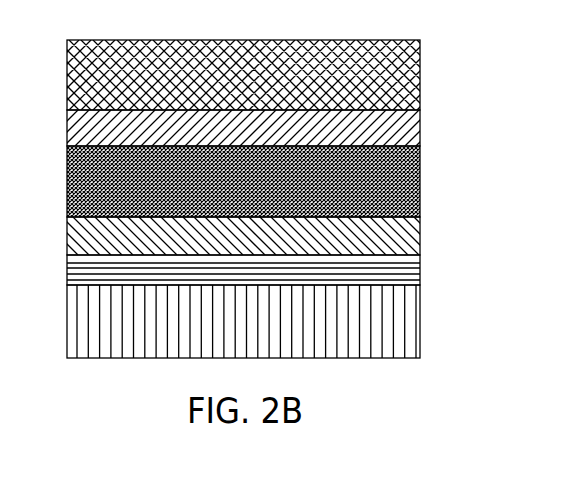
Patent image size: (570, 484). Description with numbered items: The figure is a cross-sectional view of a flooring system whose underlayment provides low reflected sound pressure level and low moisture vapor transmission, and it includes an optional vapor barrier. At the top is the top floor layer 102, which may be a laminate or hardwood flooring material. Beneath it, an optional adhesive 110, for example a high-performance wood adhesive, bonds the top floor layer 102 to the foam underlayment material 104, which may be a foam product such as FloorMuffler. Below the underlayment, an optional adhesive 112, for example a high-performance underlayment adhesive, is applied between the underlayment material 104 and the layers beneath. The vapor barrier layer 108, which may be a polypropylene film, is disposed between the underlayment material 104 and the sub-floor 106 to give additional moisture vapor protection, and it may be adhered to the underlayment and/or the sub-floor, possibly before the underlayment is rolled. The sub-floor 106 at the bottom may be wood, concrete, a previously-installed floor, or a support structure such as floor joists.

The top floor layer 102 is at (420, 75).
The adhesive 110 is at (420, 128).
The foam underlayment material 104 is at (420, 182).
The adhesive 112 is at (420, 235).
The vapor barrier layer 108 is at (420, 270).
The sub-floor 106 is at (420, 322).